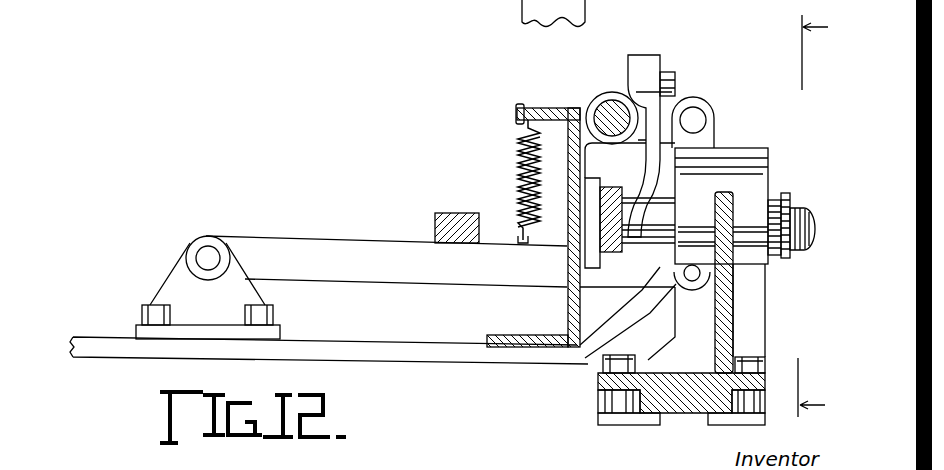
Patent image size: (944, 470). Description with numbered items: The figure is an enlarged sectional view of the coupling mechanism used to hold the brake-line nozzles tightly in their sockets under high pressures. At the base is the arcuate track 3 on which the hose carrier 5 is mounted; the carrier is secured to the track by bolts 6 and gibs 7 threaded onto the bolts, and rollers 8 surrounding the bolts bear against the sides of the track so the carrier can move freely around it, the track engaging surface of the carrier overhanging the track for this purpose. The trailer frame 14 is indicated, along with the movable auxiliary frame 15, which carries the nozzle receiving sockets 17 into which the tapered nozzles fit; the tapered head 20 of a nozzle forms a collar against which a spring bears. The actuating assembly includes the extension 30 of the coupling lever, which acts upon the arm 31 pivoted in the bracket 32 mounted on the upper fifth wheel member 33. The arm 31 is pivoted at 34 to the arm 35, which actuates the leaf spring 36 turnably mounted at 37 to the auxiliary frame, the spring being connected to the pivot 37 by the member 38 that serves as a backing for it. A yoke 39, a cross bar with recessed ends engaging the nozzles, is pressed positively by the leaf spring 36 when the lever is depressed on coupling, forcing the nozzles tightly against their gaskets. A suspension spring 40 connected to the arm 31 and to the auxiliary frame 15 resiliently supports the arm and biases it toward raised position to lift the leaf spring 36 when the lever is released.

The arcuate track 3 is at (803, 211).
The hose carrier 5 is at (755, 167).
The bolts 6 is at (618, 360).
The gibs 7 is at (640, 415).
The rollers 8 is at (600, 403).
The frame 14 is at (819, 209).
The auxiliary frame 15 is at (550, 108).
The nozzle receiving sockets 17 is at (580, 242).
The tapered head 20 is at (595, 257).
The extension 30 is at (450, 225).
The arm 31 is at (382, 248).
The bracket 32 is at (178, 276).
The upper fifth wheel member 33 is at (345, 355).
The pivot 34 is at (700, 277).
The arm 35 is at (708, 130).
The leaf spring 36 is at (622, 132).
The pivot 37 is at (608, 105).
The member 38 is at (642, 55).
The yoke 39 is at (598, 203).
The suspension spring 40 is at (518, 165).